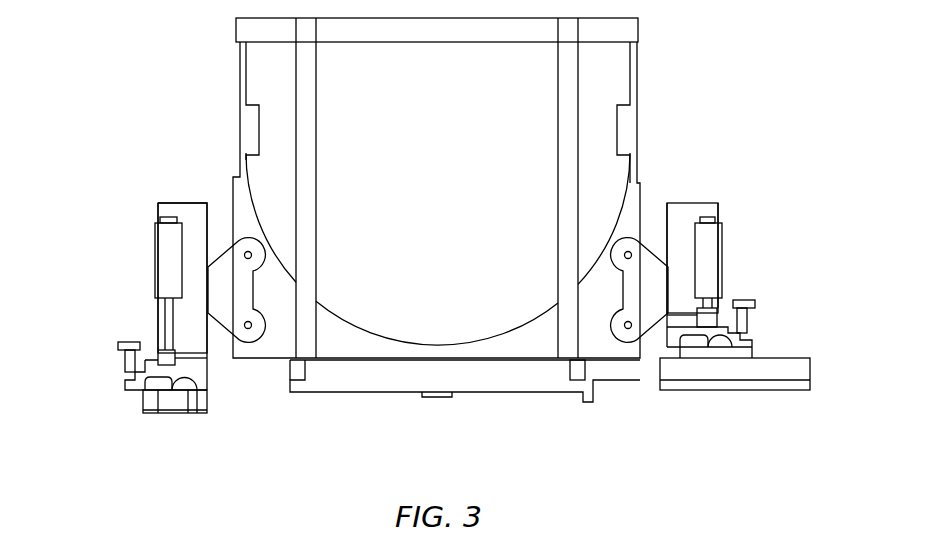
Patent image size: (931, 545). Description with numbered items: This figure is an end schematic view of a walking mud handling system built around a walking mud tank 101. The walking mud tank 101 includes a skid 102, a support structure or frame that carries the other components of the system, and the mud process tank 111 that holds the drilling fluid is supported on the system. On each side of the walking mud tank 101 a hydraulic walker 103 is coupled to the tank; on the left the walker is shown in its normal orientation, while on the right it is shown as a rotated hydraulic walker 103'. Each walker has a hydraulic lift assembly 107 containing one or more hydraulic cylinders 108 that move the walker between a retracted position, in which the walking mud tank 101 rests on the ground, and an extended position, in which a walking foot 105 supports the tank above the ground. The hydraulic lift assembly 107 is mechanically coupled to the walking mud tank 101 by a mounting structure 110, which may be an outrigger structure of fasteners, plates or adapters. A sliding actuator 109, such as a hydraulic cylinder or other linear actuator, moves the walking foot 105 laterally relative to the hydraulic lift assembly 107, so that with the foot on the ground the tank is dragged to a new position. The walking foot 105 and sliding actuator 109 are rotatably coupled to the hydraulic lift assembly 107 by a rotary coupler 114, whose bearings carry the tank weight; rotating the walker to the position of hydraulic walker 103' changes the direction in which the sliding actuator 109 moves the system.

The walking mud tank 101 is at (632, 80).
The skid 102 is at (317, 398).
The hydraulic walker 103 is at (213, 352).
The hydraulic walker (rotated position) 103' is at (730, 361).
The walking foot 105 is at (140, 402).
The hydraulic lift assembly 107 is at (150, 255).
The hydraulic cylinder 108 is at (153, 232).
The sliding actuator 109 is at (153, 352).
The mounting structure 110 is at (225, 250).
The mud process tank 111 is at (508, 346).
The rotary coupler 114 is at (193, 413).